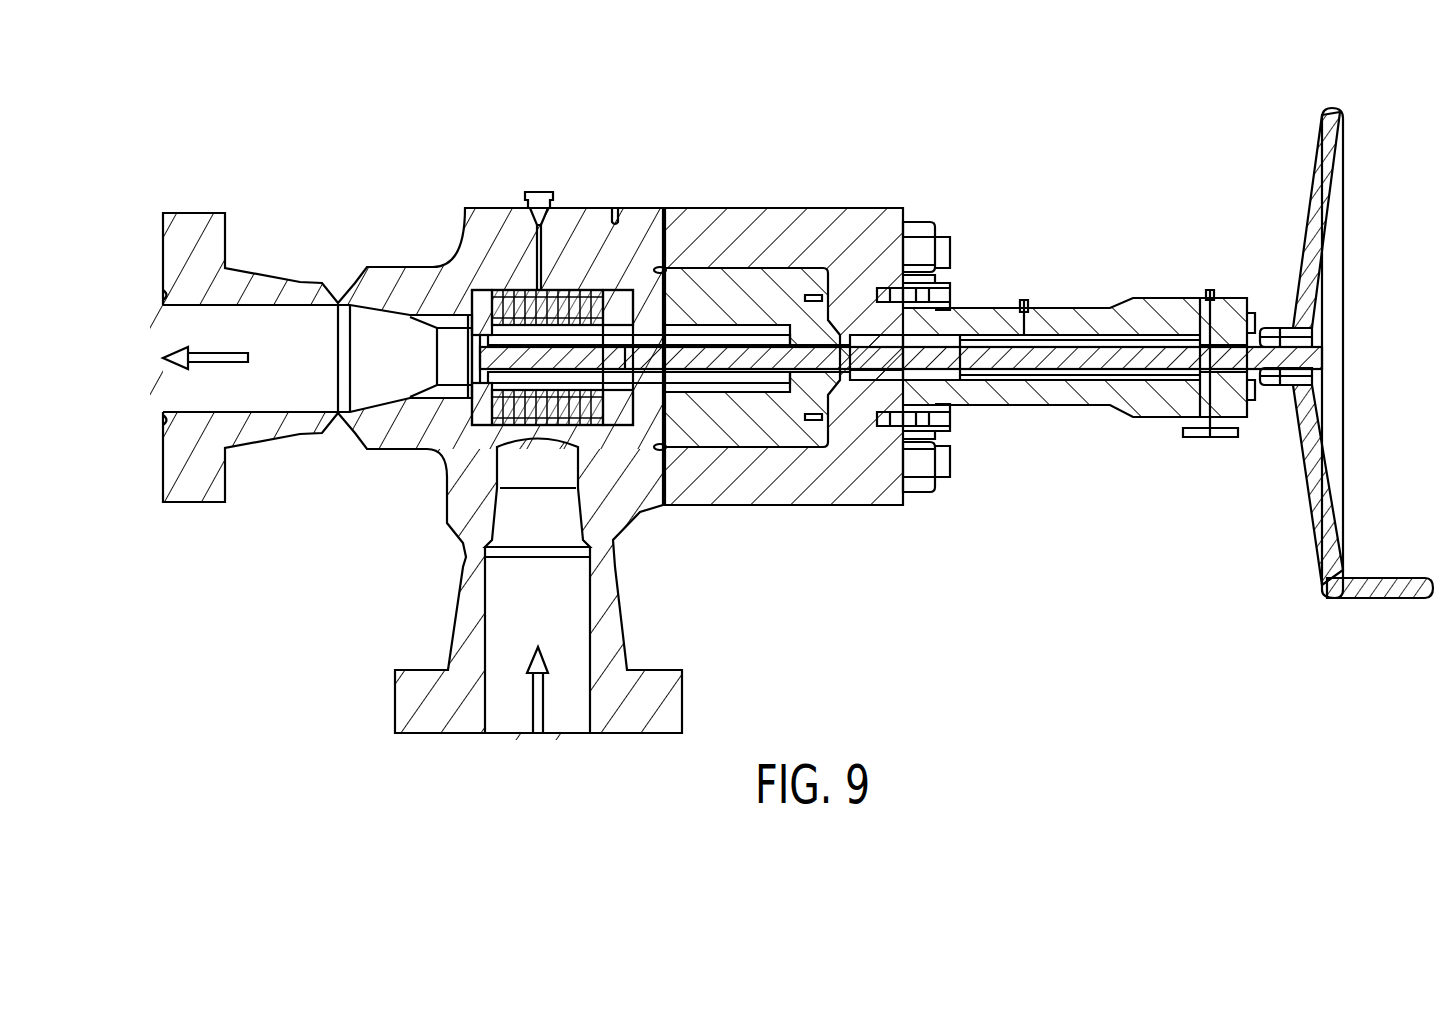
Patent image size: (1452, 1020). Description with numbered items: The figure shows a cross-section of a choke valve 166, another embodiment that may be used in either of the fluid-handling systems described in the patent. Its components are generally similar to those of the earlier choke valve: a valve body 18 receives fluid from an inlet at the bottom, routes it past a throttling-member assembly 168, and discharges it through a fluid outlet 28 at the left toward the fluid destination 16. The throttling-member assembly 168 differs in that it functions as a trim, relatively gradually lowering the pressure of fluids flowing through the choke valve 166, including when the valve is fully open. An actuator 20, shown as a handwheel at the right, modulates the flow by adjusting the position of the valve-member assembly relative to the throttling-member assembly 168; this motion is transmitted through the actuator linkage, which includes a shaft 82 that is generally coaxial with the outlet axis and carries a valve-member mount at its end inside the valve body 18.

The fluid destination 16 is at (568, 694).
The valve body 18 is at (400, 262).
The actuator 20 is at (1336, 107).
The fluid outlet 28 is at (158, 332).
The shaft 82 is at (528, 337).
The choke valve 166 is at (772, 419).
The throttling-member assembly 168 is at (573, 290).